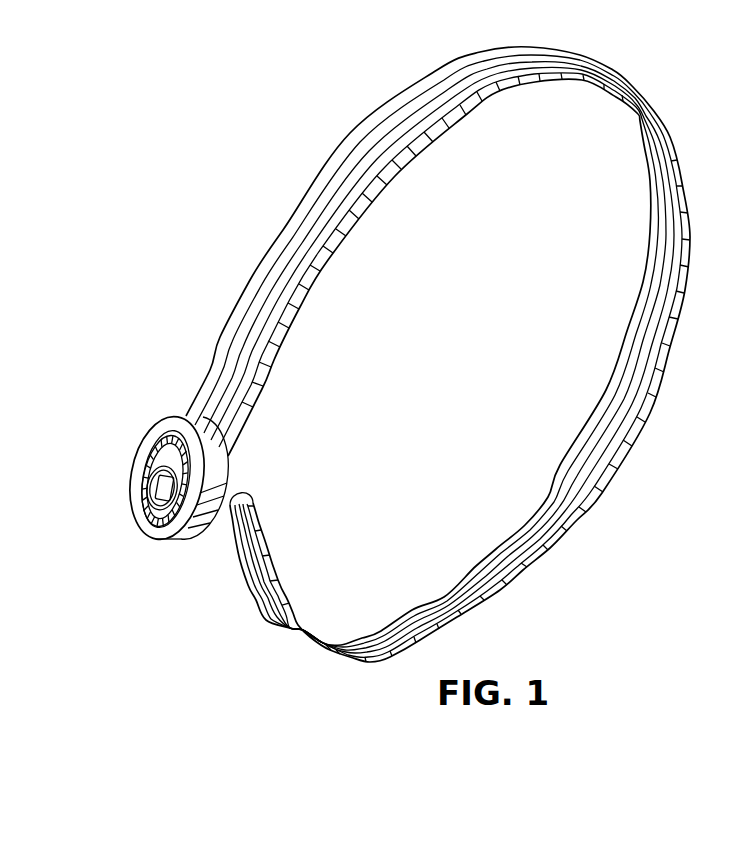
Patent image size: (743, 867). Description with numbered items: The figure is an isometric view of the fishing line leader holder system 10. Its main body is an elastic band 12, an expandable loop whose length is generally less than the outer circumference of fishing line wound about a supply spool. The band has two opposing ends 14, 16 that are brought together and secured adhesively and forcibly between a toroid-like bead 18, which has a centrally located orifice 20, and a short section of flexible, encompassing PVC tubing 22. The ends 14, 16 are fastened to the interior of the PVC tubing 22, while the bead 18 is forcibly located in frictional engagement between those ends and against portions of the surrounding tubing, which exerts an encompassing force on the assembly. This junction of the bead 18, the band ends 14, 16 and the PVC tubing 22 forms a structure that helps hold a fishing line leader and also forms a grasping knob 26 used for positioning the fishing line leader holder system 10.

The fishing line leader holder system 10 is at (246, 157).
The elastic band 12 is at (285, 232).
The opposing end 14 is at (150, 447).
The opposing end 16 is at (153, 525).
The toroid-like bead 18 is at (180, 483).
The orifice 20 is at (177, 497).
The PVC tubing 22 is at (177, 420).
The grasping knob 26 is at (128, 428).